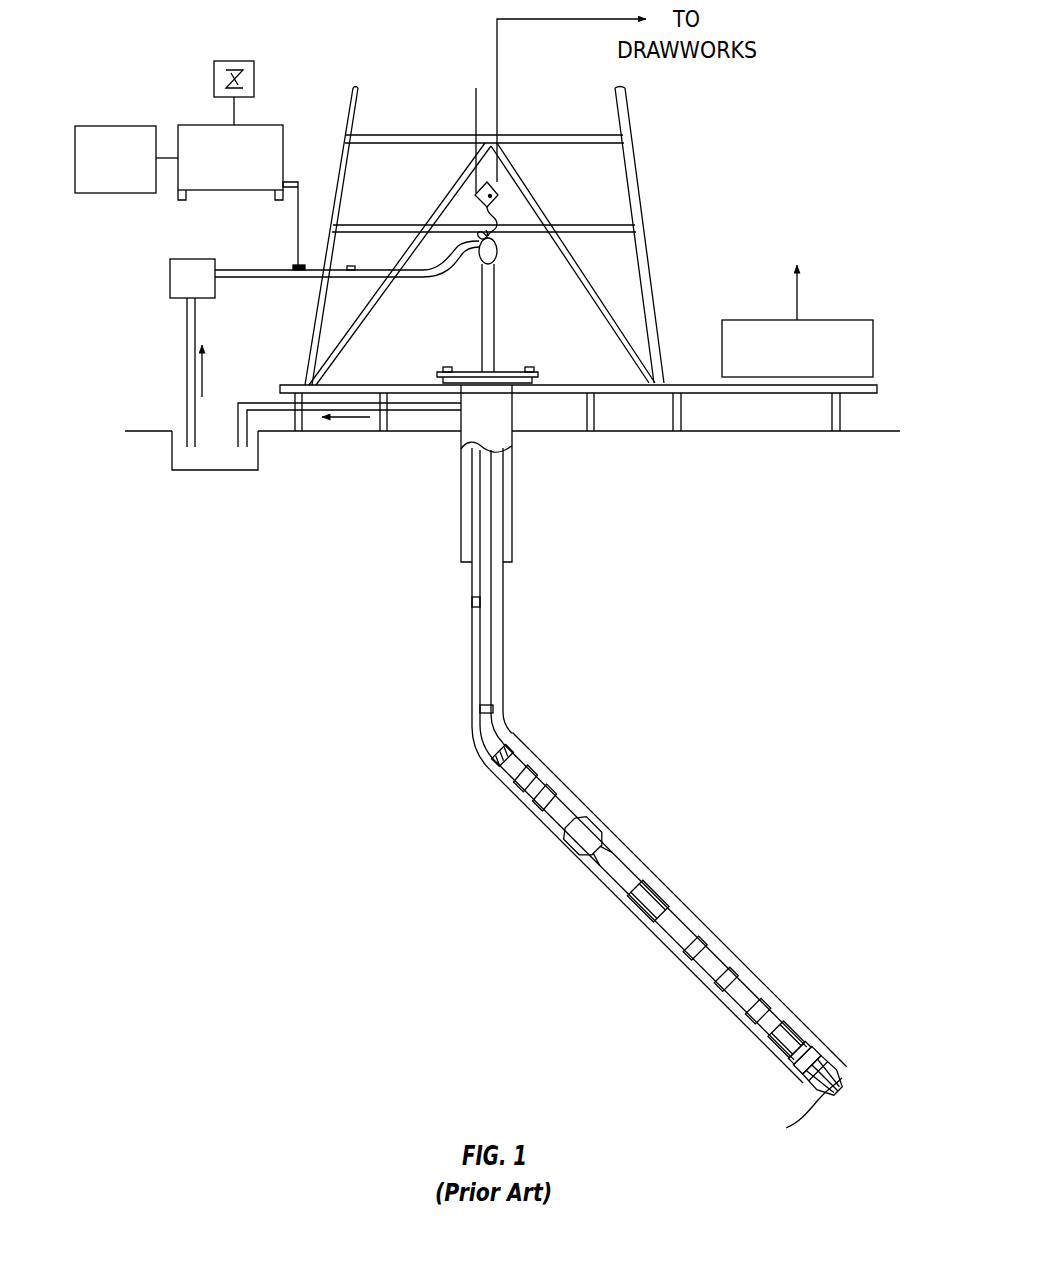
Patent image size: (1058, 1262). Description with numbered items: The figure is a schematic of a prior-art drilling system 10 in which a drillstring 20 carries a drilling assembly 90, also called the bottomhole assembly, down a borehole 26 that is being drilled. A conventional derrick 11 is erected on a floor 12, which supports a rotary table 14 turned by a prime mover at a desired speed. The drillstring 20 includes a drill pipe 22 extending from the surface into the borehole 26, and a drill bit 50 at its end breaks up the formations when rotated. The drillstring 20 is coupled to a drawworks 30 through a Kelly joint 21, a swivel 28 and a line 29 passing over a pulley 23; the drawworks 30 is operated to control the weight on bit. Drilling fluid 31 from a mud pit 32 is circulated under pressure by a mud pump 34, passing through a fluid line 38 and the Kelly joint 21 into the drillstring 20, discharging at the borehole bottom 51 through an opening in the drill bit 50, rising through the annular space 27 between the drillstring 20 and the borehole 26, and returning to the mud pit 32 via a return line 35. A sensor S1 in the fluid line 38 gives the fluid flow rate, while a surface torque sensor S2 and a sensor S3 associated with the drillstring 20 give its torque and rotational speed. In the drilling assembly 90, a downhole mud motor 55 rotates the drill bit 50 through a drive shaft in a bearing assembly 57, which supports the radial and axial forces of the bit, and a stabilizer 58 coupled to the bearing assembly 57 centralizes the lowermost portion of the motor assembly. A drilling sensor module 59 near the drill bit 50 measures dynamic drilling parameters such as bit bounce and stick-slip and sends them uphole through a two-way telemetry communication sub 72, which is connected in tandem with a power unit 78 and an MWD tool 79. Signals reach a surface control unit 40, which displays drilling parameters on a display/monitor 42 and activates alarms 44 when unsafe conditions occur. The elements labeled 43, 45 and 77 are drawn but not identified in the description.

The drilling system 10 is at (402, 36).
The derrick 11 is at (645, 238).
The floor 12 is at (671, 383).
The rotary table 14 is at (505, 367).
The drillstring 20 is at (500, 653).
The Kelly joint 21 is at (496, 310).
The drill pipe 22 is at (472, 630).
The pulley 23 is at (491, 202).
The borehole 26 is at (510, 738).
The annular space 27 is at (523, 767).
The swivel 28 is at (478, 258).
The line 29 is at (498, 115).
The drawworks 30 is at (850, 320).
The drilling fluid 31 is at (183, 457).
The mud pit 32 is at (246, 460).
The mud pump 34 is at (187, 258).
The return line 35 is at (427, 408).
The fluid line 38 is at (287, 278).
The surface control unit 40 is at (200, 125).
The display/monitor 42 is at (244, 61).
The pressure sensor 43 is at (297, 266).
The alarms 44 is at (137, 194).
The signal line 45 is at (290, 182).
The drill bit 50 is at (846, 1061).
The borehole bottom 51 is at (808, 1117).
The downhole motor 55 is at (688, 920).
The bearing assembly 57 is at (800, 1017).
The stabilizer 58 is at (805, 1040).
The drilling sensor module 59 is at (800, 1073).
The communication sub 72 is at (477, 737).
The downhole tool 77 is at (577, 851).
The power unit 78 is at (505, 777).
The MWD tool 79 is at (517, 799).
The drilling assembly 90 is at (691, 820).
The sensor S1 is at (350, 266).
The surface torque sensor S2 is at (535, 367).
The sensor S3 is at (445, 367).